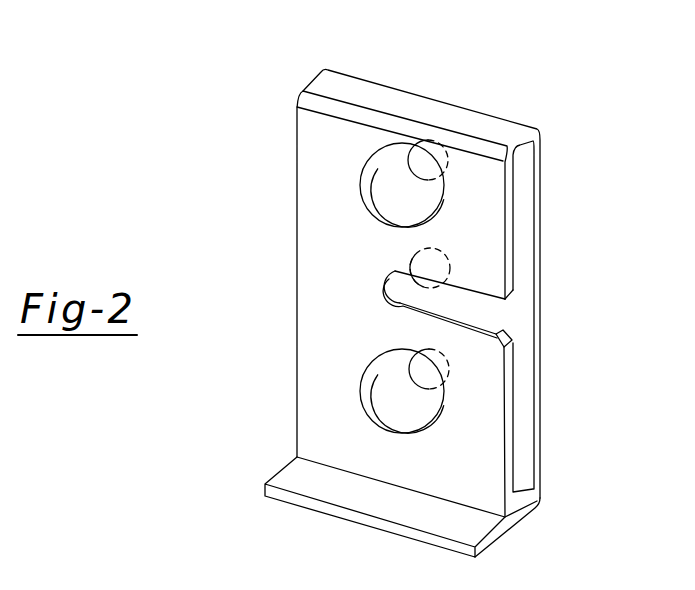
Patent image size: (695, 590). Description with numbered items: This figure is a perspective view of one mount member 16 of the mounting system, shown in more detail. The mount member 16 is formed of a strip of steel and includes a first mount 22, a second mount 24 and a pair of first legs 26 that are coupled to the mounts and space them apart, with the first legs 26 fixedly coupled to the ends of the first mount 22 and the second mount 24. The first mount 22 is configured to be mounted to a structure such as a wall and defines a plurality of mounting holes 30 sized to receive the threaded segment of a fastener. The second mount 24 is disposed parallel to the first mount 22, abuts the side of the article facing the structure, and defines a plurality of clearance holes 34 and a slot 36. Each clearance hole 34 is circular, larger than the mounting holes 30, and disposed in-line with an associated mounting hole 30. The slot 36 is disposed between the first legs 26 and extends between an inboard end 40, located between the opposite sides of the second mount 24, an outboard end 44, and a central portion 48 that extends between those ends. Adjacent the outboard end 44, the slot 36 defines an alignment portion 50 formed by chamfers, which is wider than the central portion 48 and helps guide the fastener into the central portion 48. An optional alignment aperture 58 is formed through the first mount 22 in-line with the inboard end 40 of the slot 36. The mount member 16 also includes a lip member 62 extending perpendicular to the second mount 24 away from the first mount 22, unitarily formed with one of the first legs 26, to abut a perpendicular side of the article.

The mount member 16 is at (190, 104).
The first mount 22 is at (535, 192).
The second mount 24 is at (510, 238).
The first legs 26 is at (368, 88).
The mounting holes 30 is at (418, 170).
The clearance holes 34 is at (368, 193).
The slot 36 is at (420, 293).
The inboard end 40 is at (383, 283).
The outboard end 44 is at (510, 288).
The central portion 48 is at (462, 323).
The alignment portion 50 is at (490, 351).
The alignment aperture 58 is at (450, 286).
The lip member 62 is at (280, 478).